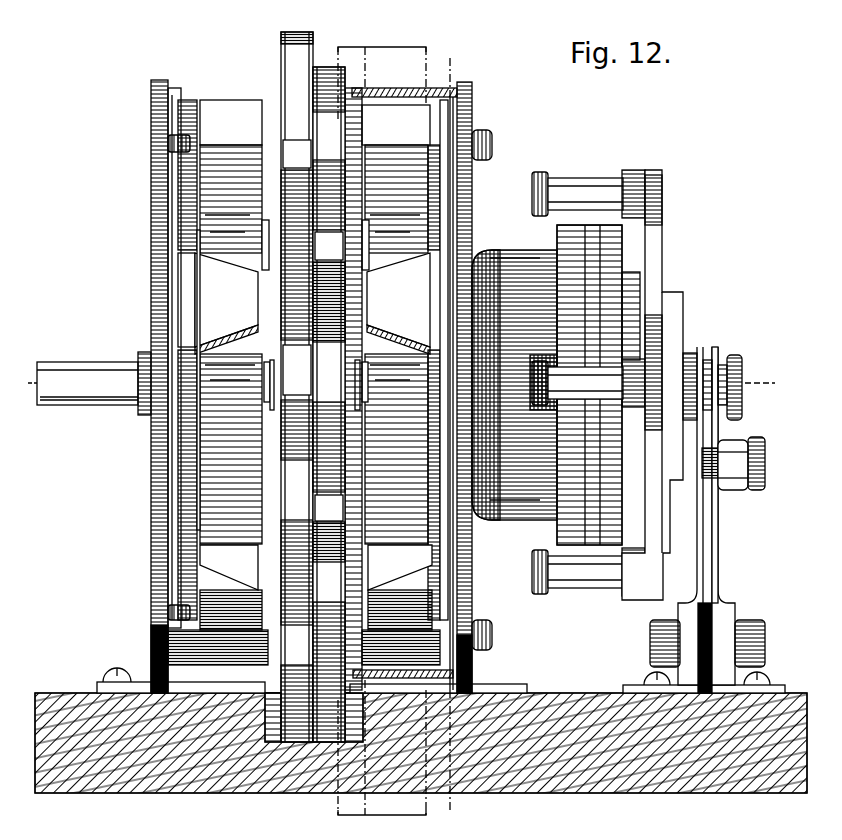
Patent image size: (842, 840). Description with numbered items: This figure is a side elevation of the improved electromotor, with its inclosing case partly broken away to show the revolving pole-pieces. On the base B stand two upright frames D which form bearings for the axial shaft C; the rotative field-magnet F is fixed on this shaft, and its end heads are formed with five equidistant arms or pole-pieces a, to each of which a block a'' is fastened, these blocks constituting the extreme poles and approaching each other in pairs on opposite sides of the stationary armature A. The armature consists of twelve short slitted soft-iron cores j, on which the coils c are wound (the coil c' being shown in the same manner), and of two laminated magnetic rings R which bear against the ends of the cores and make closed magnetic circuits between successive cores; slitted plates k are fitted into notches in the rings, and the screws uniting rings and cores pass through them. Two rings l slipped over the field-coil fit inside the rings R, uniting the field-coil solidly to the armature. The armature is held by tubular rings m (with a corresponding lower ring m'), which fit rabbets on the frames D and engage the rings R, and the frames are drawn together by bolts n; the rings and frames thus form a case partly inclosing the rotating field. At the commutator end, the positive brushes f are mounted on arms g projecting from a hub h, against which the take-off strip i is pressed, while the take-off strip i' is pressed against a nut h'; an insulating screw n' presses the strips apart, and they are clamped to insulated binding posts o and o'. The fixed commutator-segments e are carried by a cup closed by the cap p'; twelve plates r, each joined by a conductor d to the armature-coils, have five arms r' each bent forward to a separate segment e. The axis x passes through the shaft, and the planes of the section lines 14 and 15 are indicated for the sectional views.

The armature A is at (254, 328).
The base B is at (421, 734).
The axial shaft C is at (94, 383).
The upright frames D is at (155, 503).
The field-magnet F is at (197, 460).
The magnetic rings R is at (311, 394).
The pole-pieces a is at (313, 360).
The pole blocks a'' is at (304, 382).
The armature coils c is at (314, 387).
The field-magnet coil c' is at (329, 404).
The conductor d is at (195, 435).
The commutator-segments e is at (589, 385).
The positive brushes f is at (592, 186).
The brush arms g is at (660, 248).
The hub h is at (697, 374).
The nut h' is at (732, 374).
The take-off brush i is at (707, 520).
The take-off brush i' is at (721, 475).
The armature cores j is at (313, 330).
The plates k is at (263, 238).
The rings l is at (312, 312).
The tubular rings m is at (404, 82).
The bottom plate m' is at (403, 665).
The bolts n is at (319, 390).
The insulating screw n' is at (743, 463).
The binding post o is at (386, 669).
The binding post o' is at (767, 669).
The flange or cap p' is at (631, 303).
The plates r is at (507, 385).
The arms r' is at (531, 367).
The axis line x is at (400, 383).
The section line 14 is at (462, 63).
The section lines 15 is at (385, 46).